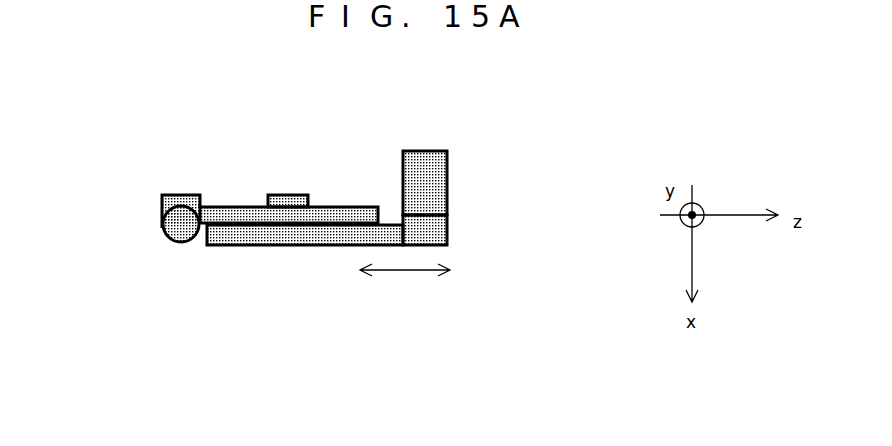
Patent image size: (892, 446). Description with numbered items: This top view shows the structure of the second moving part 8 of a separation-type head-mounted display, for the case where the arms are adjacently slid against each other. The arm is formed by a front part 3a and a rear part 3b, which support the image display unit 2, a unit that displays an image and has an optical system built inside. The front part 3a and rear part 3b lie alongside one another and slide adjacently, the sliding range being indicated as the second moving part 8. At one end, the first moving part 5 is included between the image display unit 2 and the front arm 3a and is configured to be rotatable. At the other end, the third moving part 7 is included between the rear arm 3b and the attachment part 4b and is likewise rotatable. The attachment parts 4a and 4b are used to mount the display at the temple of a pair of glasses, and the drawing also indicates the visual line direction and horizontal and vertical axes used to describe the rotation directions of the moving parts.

The image display unit 2 is at (438, 183).
The front part of the arm 3a is at (286, 236).
The rear part of the arm 3b is at (362, 217).
The attachment part 4a is at (273, 194).
The attachment part 4b is at (167, 195).
The first moving part 5 is at (438, 228).
The third moving part 7 is at (181, 228).
The second moving part 8 is at (405, 285).